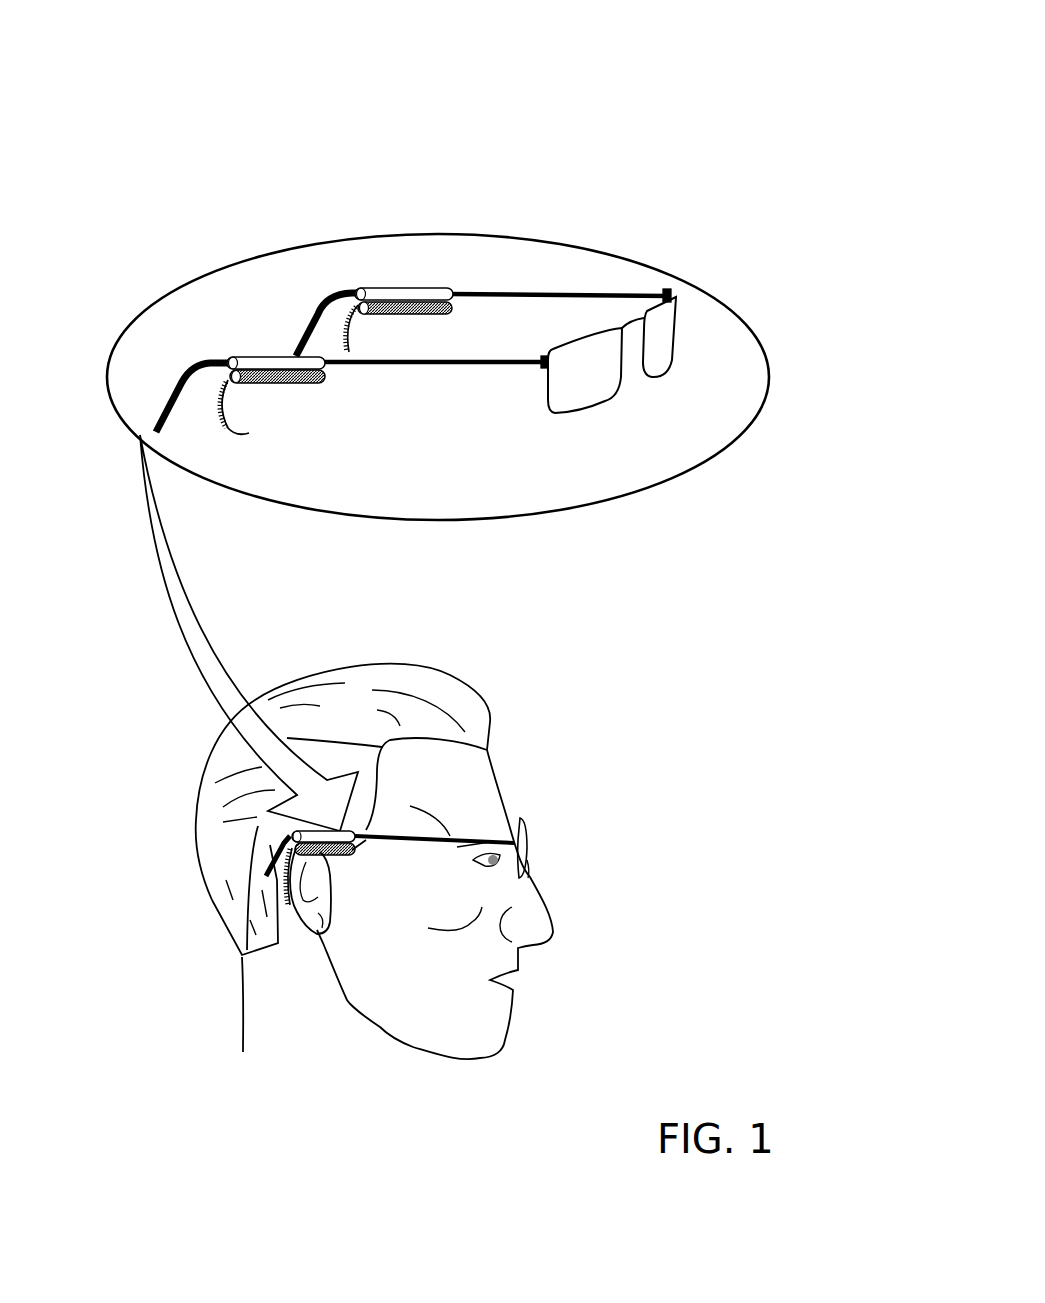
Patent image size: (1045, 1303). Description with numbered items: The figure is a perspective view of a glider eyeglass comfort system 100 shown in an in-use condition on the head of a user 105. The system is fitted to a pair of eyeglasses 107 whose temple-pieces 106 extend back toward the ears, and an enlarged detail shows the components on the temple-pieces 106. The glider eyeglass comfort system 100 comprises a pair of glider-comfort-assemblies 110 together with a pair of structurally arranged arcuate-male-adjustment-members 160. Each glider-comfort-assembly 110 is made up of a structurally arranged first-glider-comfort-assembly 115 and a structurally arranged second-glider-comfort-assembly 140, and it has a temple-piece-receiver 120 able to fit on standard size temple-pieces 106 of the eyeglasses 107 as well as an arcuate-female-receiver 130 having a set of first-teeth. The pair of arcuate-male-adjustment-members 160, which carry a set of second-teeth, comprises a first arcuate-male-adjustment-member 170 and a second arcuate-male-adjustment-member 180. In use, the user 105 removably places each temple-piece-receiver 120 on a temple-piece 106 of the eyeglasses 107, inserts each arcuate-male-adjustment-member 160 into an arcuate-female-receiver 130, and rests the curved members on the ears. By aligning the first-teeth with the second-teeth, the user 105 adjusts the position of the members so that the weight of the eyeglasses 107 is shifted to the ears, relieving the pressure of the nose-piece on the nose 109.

The glider eyeglass comfort system 100 is at (630, 72).
The user 105 is at (467, 695).
The temple-pieces 106 is at (523, 291).
The eyeglasses 107 is at (612, 291).
The nose 109 is at (529, 872).
The glider-comfort-assembly 110 is at (642, 115).
The first-glider-comfort-assembly 115 is at (662, 158).
The temple-piece-receiver 120 is at (390, 281).
The arcuate-female-receiver 130 is at (438, 292).
The second-glider-comfort-assembly 140 is at (281, 388).
The arcuate-male-adjustment-members 160 is at (343, 316).
The first arcuate-male-adjustment-member 170 is at (344, 338).
The second arcuate-male-adjustment-member 180 is at (215, 400).